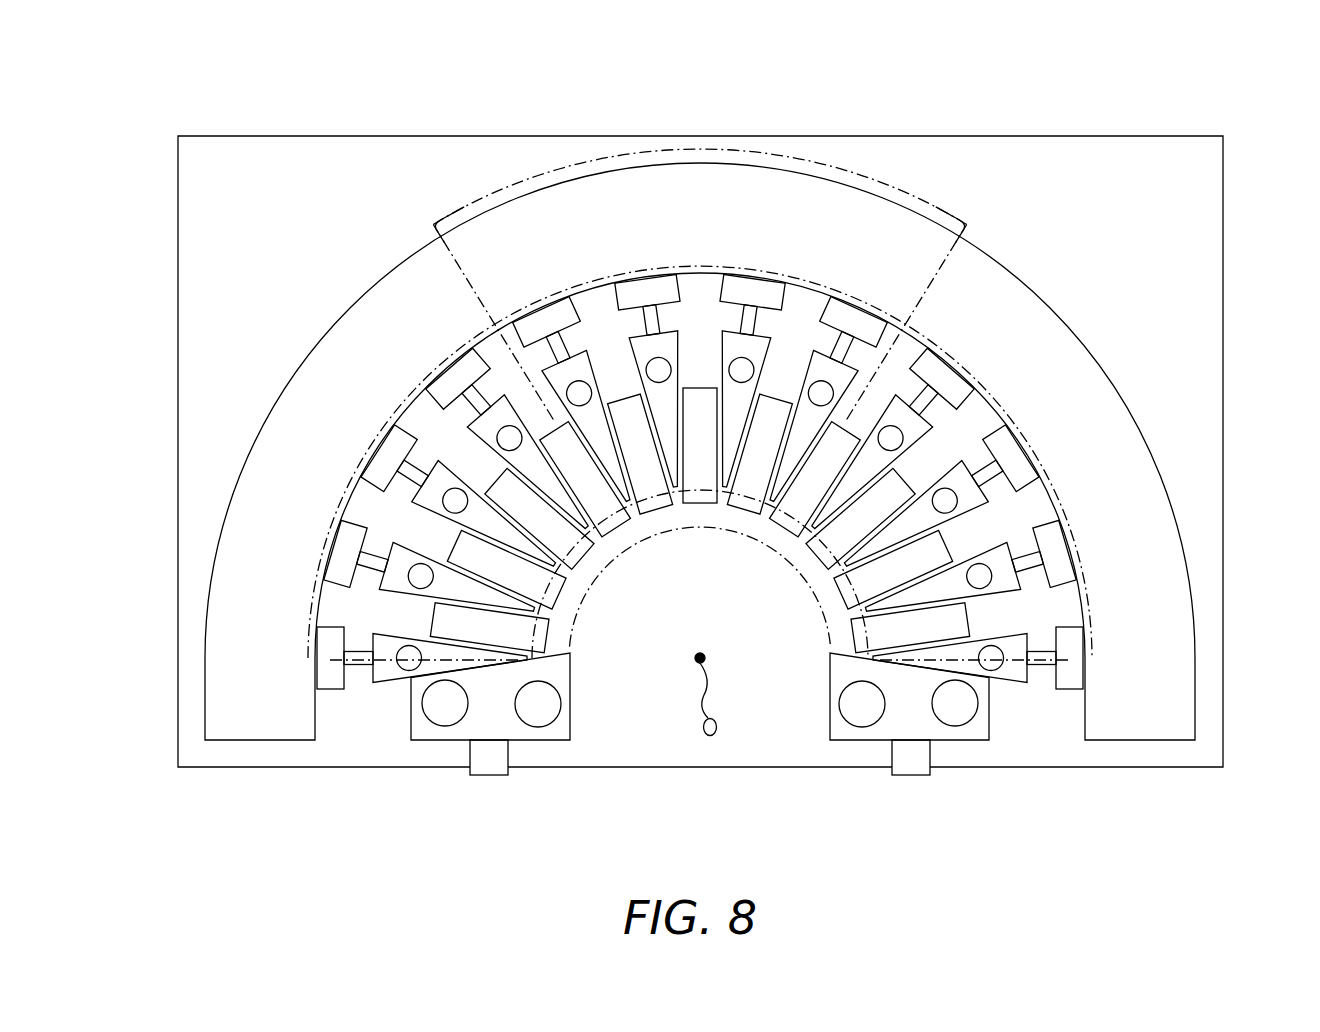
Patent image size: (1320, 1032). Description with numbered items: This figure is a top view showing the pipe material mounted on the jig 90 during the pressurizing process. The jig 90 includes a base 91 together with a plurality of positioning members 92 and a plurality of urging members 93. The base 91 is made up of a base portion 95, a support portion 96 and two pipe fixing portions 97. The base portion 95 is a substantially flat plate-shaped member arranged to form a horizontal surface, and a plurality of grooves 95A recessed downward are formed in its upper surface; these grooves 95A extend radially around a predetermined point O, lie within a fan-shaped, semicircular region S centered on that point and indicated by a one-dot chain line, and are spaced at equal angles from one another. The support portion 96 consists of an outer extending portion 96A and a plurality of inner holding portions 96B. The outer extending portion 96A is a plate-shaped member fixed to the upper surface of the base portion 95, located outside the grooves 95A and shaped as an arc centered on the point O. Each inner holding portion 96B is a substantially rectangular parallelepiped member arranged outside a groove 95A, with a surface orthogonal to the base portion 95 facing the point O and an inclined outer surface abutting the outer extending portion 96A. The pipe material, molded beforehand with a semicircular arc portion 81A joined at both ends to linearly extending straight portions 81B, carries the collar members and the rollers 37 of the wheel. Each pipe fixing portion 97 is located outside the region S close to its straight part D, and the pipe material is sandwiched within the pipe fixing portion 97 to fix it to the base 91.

The jig 90 is at (907, 105).
The base portion 95 is at (322, 135).
The base 91 is at (370, 175).
The support portion 96 is at (735, 82).
The outer extending portion 96A is at (578, 185).
The inner holding portion 96B is at (750, 288).
The fan-shaped region S is at (1003, 403).
The urging member 93 is at (440, 412).
The groove 95A is at (622, 493).
The positioning member 92 is at (815, 350).
The roller 37 is at (562, 618).
The arc portion 81A is at (925, 560).
The straight portion 81B is at (488, 768).
The pipe fixing portion 97 is at (522, 732).
The straight part D is at (440, 663).